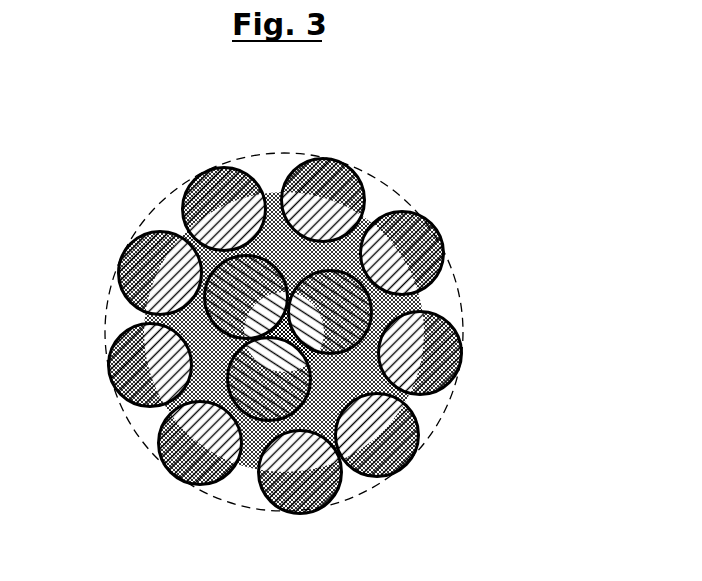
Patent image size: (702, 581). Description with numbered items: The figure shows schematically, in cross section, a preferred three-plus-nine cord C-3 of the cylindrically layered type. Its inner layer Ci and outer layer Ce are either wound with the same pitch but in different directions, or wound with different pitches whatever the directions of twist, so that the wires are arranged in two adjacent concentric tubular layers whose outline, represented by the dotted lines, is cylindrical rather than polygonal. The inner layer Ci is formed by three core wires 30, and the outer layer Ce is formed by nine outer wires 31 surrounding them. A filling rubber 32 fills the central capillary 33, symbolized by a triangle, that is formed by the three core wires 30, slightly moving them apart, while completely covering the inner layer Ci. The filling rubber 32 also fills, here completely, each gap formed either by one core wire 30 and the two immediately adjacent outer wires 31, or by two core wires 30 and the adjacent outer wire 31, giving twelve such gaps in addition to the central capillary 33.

The core wire 30 is at (270, 385).
The outer wire 31 is at (132, 360).
The filling rubber 32 is at (360, 223).
The central capillary 33 is at (297, 331).
The outer layer Ce is at (165, 213).
The inner layer Ci is at (157, 417).
The cord C-3 is at (348, 138).